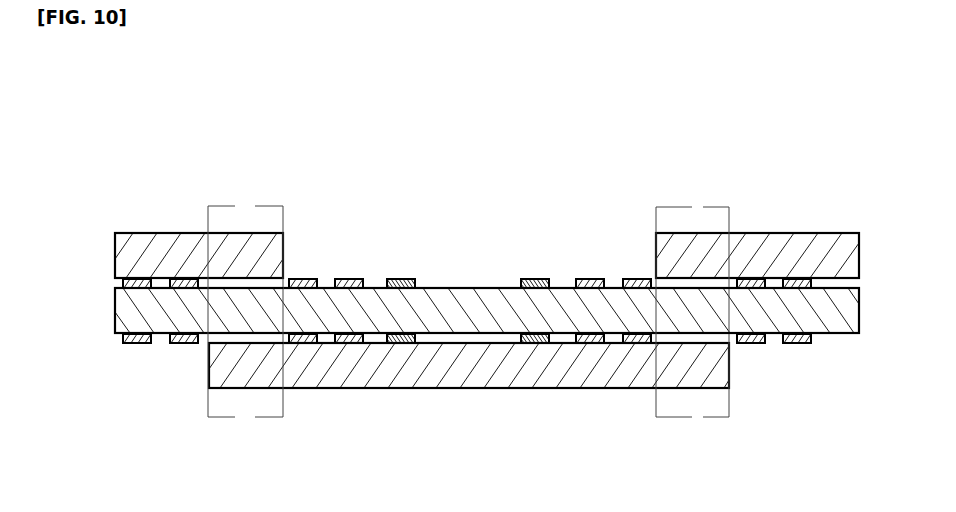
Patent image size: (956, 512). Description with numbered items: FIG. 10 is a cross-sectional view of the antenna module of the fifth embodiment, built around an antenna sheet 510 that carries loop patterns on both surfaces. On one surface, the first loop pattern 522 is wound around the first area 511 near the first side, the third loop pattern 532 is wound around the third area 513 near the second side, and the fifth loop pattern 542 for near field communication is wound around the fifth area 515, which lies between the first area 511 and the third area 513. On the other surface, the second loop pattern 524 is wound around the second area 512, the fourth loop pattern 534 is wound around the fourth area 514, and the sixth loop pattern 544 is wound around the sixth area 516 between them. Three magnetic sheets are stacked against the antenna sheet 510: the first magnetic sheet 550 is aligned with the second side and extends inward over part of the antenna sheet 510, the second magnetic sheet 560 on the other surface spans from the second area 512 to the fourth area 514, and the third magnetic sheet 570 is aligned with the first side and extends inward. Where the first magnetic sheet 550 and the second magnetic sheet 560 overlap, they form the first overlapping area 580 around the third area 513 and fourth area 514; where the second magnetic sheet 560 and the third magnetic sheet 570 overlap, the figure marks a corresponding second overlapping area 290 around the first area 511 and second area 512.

The antenna sheet 510 is at (115, 309).
The first area 511 is at (697, 288).
The second area 512 is at (698, 333).
The third area 513 is at (252, 288).
The fourth area 514 is at (245, 343).
The fifth area 515 is at (460, 288).
The sixth area 516 is at (470, 333).
The first loop pattern 522 is at (637, 279).
The second loop pattern 524 is at (637, 343).
The third loop pattern 532 is at (185, 279).
The fourth loop pattern 534 is at (185, 343).
The fifth loop pattern 542 is at (400, 279).
The sixth loop pattern 544 is at (400, 343).
The first magnetic sheet 550 is at (115, 253).
The second magnetic sheet 560 is at (512, 388).
The third magnetic sheet 570 is at (826, 233).
The first overlapping area 580 is at (245, 206).
The second overlapping region 290 is at (693, 207).